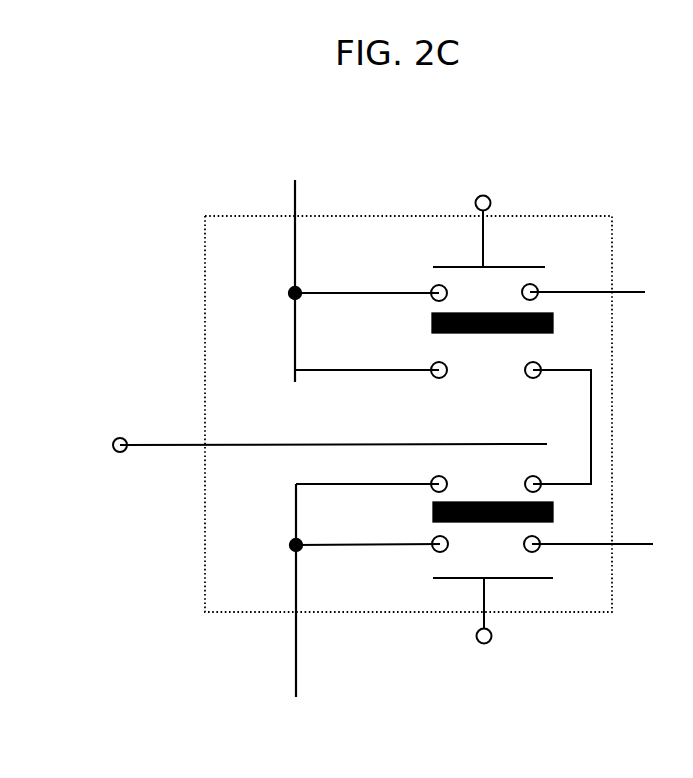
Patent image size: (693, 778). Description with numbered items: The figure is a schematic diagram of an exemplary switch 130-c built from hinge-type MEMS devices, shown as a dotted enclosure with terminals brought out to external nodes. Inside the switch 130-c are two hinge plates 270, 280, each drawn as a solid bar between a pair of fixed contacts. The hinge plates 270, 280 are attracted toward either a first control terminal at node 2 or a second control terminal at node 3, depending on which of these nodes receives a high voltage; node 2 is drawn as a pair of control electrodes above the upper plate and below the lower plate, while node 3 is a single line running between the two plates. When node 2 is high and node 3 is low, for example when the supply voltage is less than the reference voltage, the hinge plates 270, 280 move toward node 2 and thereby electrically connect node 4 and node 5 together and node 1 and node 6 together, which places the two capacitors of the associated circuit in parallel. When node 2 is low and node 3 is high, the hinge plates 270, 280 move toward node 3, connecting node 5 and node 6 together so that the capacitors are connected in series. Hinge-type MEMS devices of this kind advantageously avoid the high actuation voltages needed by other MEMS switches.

The node 1 is at (601, 542).
The first control terminal node 2 is at (493, 423).
The second control terminal node 3 is at (317, 443).
The node 4 is at (595, 290).
The node 5 is at (362, 264).
The node 6 is at (364, 610).
The switch 130-c is at (205, 359).
The hinge plate 270 is at (432, 324).
The hinge plate 280 is at (433, 511).